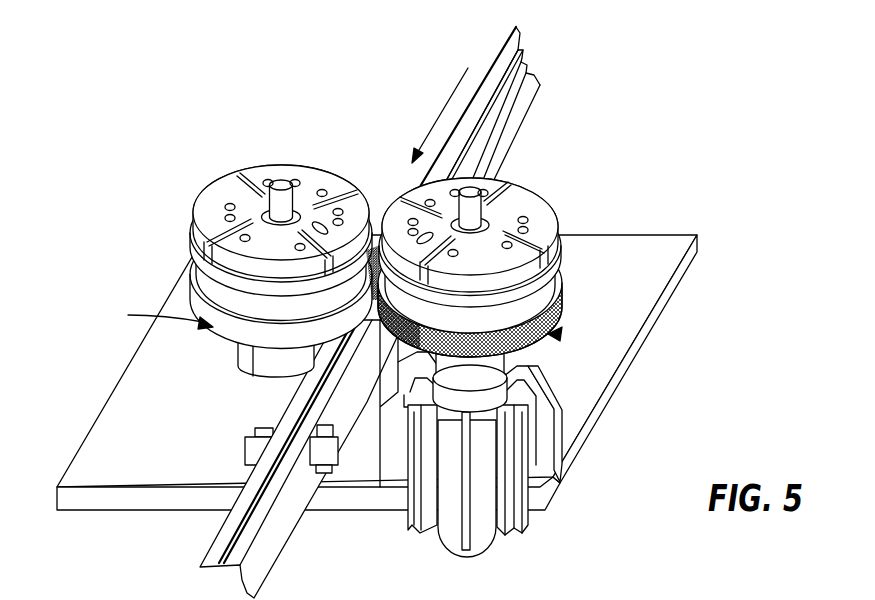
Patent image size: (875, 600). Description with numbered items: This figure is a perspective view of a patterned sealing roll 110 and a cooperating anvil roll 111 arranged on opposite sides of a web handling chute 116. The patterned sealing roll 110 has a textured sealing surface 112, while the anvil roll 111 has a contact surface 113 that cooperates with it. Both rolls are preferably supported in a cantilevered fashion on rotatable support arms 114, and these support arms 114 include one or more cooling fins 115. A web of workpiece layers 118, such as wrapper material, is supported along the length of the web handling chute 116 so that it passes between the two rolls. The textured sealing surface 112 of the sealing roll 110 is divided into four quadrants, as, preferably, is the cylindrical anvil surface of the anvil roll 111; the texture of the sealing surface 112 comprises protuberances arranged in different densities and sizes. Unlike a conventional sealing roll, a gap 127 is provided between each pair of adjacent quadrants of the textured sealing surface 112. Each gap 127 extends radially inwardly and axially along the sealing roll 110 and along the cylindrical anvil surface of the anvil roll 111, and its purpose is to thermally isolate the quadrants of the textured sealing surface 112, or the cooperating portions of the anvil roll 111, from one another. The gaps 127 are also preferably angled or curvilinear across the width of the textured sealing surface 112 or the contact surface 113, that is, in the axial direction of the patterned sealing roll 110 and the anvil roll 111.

The patterned sealing roll 110 is at (563, 281).
The anvil roll 111 is at (205, 306).
The textured sealing surface 112 is at (556, 334).
The contact surface 113 is at (148, 316).
The rotatable support arms 114 is at (262, 357).
The cooling fins 115 is at (422, 512).
The web handling chute 116 is at (523, 105).
The web of workpiece layers 118 is at (462, 123).
The gap 127 is at (460, 372).